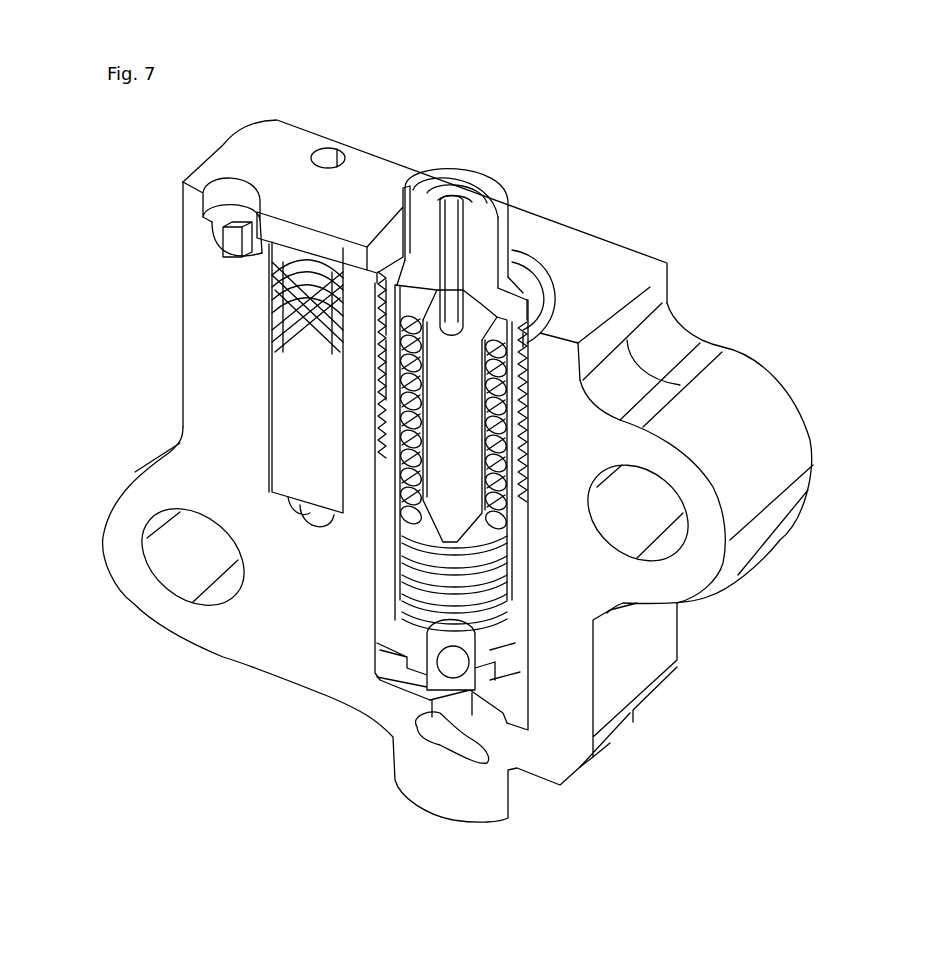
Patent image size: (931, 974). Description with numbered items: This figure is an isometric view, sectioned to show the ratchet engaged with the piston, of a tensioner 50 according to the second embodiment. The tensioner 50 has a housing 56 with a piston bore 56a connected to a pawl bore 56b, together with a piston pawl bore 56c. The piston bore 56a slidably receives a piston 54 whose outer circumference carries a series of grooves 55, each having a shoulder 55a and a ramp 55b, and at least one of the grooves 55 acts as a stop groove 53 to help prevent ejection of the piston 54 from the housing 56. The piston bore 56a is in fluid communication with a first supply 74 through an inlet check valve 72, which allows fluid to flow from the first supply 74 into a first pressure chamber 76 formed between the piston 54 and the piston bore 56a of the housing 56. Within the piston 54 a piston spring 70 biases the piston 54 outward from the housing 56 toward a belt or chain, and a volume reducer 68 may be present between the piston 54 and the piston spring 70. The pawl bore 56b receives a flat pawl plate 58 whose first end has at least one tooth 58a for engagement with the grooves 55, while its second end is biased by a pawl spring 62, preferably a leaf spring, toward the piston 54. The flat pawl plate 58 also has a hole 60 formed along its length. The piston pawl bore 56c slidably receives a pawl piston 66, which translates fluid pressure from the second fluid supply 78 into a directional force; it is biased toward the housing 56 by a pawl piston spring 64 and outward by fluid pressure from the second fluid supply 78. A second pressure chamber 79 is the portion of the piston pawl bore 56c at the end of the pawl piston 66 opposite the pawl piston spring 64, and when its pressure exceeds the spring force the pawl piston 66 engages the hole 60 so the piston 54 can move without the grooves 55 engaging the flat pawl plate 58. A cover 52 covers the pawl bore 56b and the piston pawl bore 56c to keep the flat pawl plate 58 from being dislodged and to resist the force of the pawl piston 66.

The tensioner 50 is at (514, 88).
The cover 52 is at (263, 150).
The stop groove 53 is at (386, 440).
The piston 54 is at (483, 223).
The grooves 55 is at (523, 397).
The shoulder 55a is at (384, 382).
The ramp 55b is at (385, 327).
The housing 56 is at (573, 653).
The piston bore 56a is at (548, 305).
The pawl bore 56b is at (250, 263).
The piston pawl bore 56c is at (270, 448).
The flat pawl plate 58 is at (347, 277).
The tooth 58a is at (380, 273).
The hole 60 is at (308, 263).
The pawl spring 62 is at (223, 237).
The pawl piston spring 64 is at (285, 290).
The pawl piston 66 is at (297, 370).
The volume reducer 68 is at (478, 327).
The piston spring 70 is at (490, 533).
The inlet check valve 72 is at (447, 663).
The first supply 74 is at (445, 743).
The first pressure chamber 76 is at (392, 617).
The second fluid supply 78 is at (303, 515).
The second pressure chamber 79 is at (275, 495).